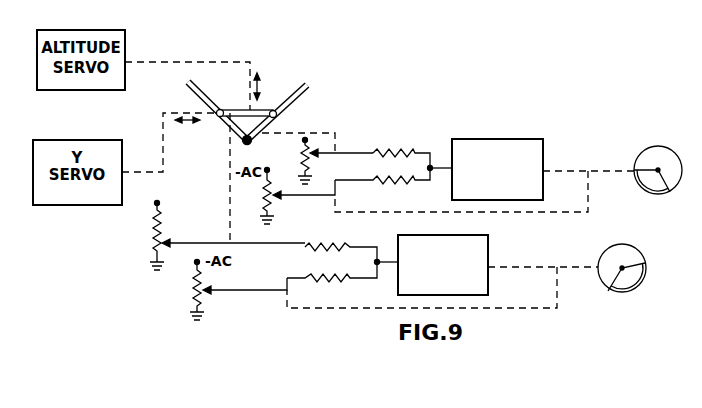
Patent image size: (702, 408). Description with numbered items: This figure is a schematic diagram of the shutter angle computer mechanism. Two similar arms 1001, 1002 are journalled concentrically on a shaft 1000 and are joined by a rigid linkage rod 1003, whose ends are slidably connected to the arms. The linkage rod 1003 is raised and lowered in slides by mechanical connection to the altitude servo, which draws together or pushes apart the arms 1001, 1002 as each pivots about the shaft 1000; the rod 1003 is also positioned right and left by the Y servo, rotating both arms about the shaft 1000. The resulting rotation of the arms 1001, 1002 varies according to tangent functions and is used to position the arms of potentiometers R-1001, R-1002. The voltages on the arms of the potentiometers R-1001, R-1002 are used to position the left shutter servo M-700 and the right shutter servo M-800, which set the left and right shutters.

The shaft 1000 is at (262, 150).
The arm 1001 is at (200, 105).
The arm 1002 is at (289, 100).
The linkage rod 1003 is at (243, 110).
The potentiometer R-1001 is at (227, 232).
The potentiometer R-1002 is at (320, 158).
The right shutter servo M-800 is at (454, 139).
The left shutter servo M-700 is at (406, 235).